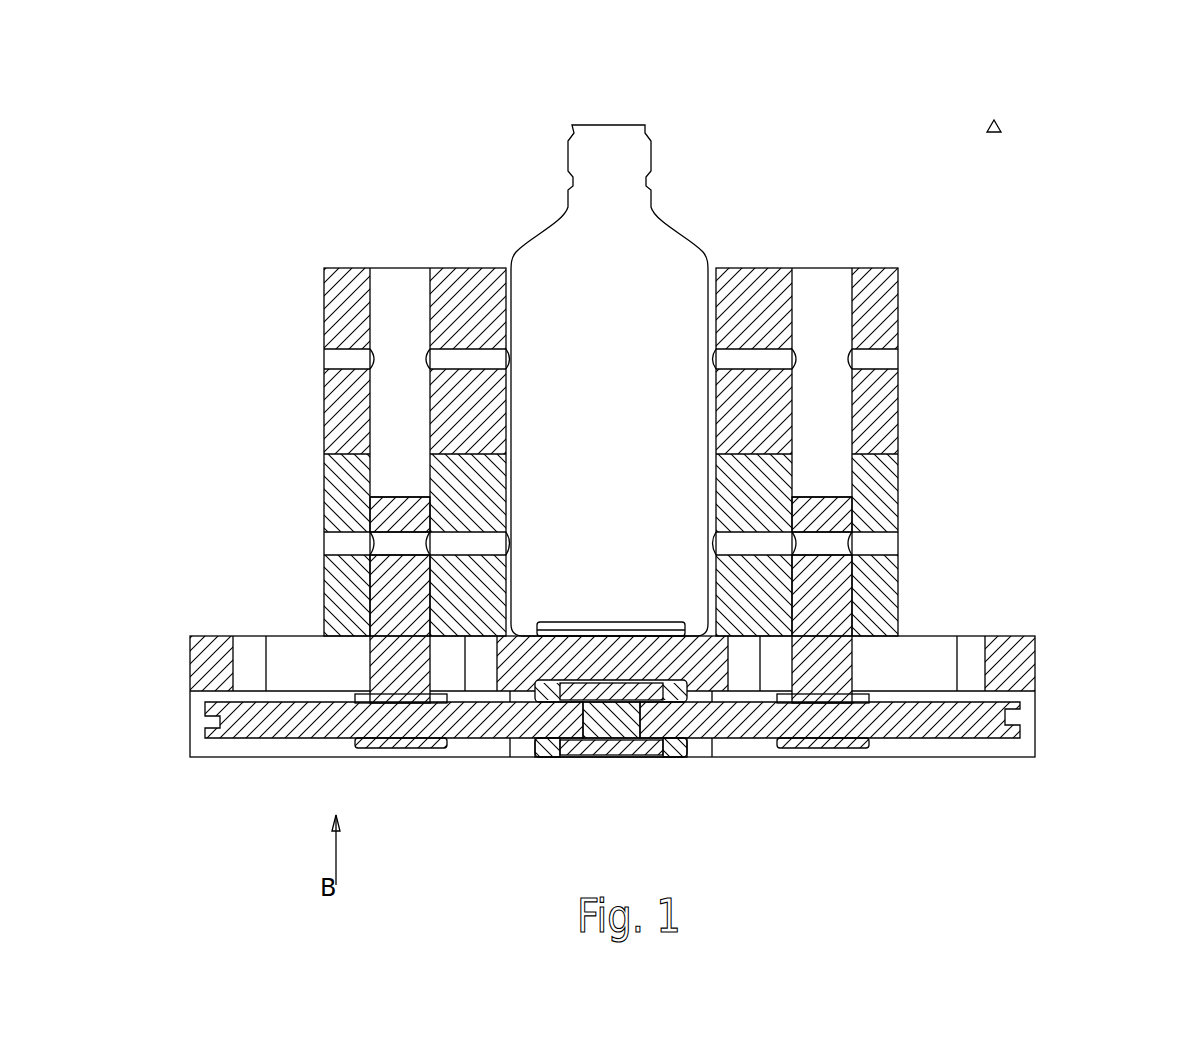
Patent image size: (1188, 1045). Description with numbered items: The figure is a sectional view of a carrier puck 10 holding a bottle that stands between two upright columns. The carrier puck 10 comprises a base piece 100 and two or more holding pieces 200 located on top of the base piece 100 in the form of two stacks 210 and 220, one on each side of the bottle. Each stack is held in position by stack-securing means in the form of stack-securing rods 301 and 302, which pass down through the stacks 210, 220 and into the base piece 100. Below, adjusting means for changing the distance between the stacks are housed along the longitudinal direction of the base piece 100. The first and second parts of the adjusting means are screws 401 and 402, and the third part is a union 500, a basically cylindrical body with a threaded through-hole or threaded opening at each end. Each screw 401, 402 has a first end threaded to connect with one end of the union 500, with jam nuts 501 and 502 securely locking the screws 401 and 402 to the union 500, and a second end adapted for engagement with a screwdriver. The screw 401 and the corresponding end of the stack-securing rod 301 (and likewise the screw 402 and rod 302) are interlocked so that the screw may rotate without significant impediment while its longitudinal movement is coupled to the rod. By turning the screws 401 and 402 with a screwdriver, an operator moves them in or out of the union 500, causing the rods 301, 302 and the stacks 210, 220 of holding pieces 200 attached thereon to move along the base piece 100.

The carrier puck 10 is at (994, 120).
The base piece 100 is at (1037, 670).
The holding pieces 200 is at (551, 362).
The stack 210 is at (345, 258).
The stack 220 is at (882, 258).
The stack-securing rod 301 is at (406, 686).
The stack-securing rod 302 is at (826, 670).
The screw 401 is at (252, 738).
The screw 402 is at (947, 718).
The union 500 is at (598, 757).
The jam nut 501 is at (547, 745).
The jam nut 502 is at (677, 745).